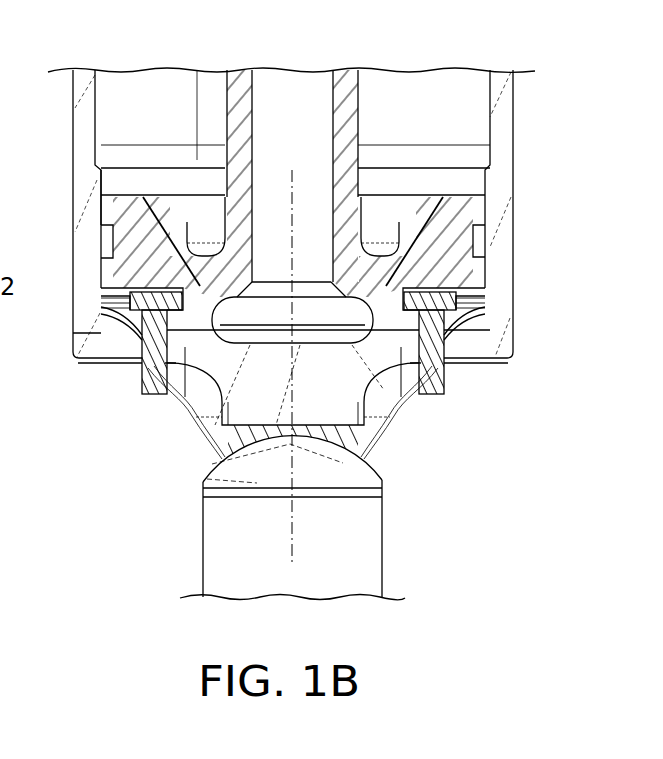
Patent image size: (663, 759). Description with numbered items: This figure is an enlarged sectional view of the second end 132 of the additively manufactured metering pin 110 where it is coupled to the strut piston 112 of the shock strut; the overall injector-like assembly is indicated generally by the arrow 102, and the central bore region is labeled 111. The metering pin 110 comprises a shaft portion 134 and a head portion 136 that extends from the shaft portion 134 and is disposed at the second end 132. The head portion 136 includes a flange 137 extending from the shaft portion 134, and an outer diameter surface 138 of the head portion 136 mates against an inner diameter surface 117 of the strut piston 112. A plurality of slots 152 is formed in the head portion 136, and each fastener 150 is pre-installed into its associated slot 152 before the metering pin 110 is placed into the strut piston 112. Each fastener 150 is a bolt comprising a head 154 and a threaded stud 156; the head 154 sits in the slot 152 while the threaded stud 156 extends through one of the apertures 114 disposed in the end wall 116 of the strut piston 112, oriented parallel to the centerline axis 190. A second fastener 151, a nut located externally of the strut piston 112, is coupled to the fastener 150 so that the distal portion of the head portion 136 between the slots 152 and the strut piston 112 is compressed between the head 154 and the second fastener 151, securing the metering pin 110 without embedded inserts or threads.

The fuel injector 102 is at (150, 585).
The metering pin 110 is at (352, 96).
The needle bore 111 is at (310, 132).
The strut piston 112 is at (85, 130).
The apertures 114 is at (143, 338).
The end wall 116 is at (217, 440).
The inner diameter surface 117 is at (101, 182).
The second end 132 is at (72, 200).
The shaft portion 134 is at (235, 118).
The head portion 136 is at (122, 273).
The flange 137 is at (446, 225).
The outer diameter surface 138 is at (100, 221).
The fastener 150 is at (150, 395).
The second fastener 151 is at (143, 378).
The slots 152 is at (213, 263).
The head 154 is at (101, 293).
The threaded stud 156 is at (75, 358).
The centerline axis 190 is at (292, 545).